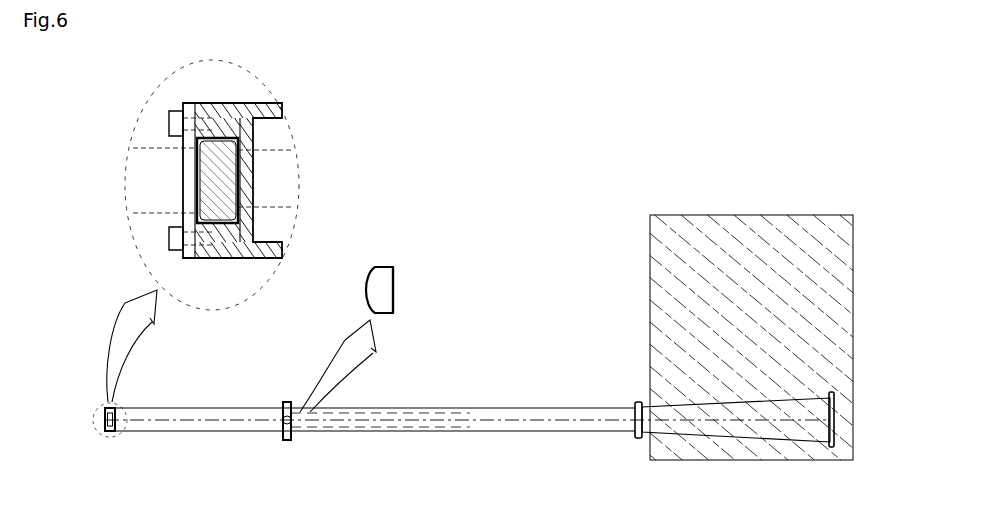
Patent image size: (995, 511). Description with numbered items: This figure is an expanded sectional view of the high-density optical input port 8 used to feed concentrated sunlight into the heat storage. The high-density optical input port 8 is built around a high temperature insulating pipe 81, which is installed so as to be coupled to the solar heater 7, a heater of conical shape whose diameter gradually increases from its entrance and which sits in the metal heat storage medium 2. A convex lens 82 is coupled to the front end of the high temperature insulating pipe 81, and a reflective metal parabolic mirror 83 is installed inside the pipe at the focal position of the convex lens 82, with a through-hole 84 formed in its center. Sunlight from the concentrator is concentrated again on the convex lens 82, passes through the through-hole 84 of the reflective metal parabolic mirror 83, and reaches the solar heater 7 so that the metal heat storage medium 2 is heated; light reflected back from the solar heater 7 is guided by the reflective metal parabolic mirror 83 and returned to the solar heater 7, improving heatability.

The metal heat storage medium 2 is at (633, 230).
The solar heater 7 is at (673, 393).
The high-density optical input port 8 is at (461, 321).
The high temperature insulating pipe 81 is at (512, 408).
The convex lens 82 is at (232, 180).
The reflective metal parabolic mirror 83 is at (458, 293).
The through-hole 84 is at (367, 290).